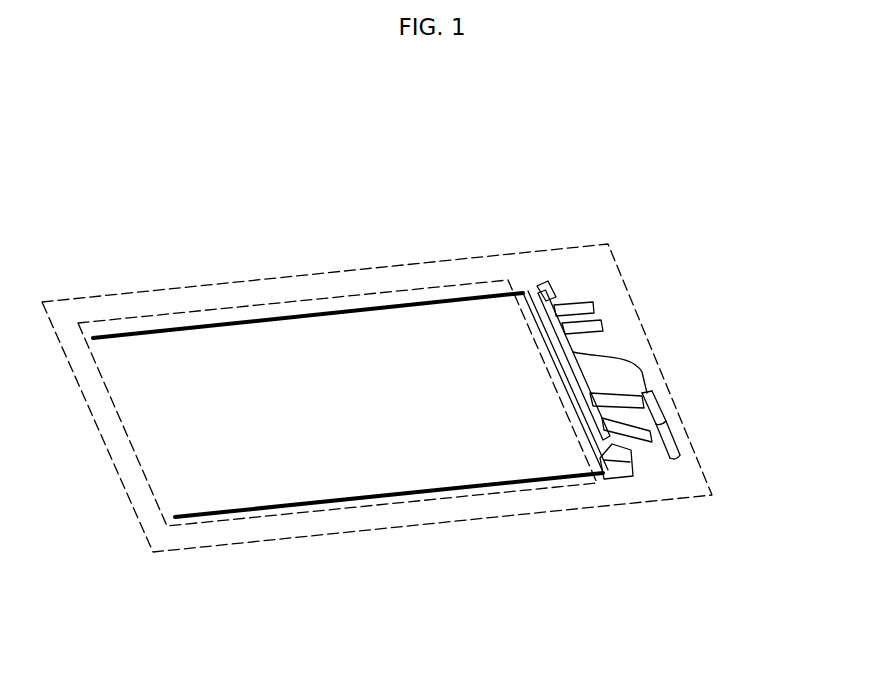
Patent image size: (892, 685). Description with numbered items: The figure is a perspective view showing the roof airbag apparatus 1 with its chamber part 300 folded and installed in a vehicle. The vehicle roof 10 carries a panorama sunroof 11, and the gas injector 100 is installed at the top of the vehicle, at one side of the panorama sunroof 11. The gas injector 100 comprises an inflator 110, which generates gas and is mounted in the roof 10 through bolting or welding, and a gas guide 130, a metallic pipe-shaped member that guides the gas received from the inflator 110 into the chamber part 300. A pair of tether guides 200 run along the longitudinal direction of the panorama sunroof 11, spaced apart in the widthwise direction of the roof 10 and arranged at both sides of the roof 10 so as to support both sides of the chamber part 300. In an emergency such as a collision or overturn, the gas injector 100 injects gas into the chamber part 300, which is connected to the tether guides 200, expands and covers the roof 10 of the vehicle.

The roof airbag apparatus 1 is at (604, 327).
The vehicle roof 10 is at (583, 268).
The panorama sunroof 11 is at (413, 287).
The gas injector 100 is at (694, 402).
The inflator 110 is at (663, 445).
The gas guide 130 is at (653, 410).
The tether guide 200 is at (243, 320).
The chamber part 300 is at (572, 368).